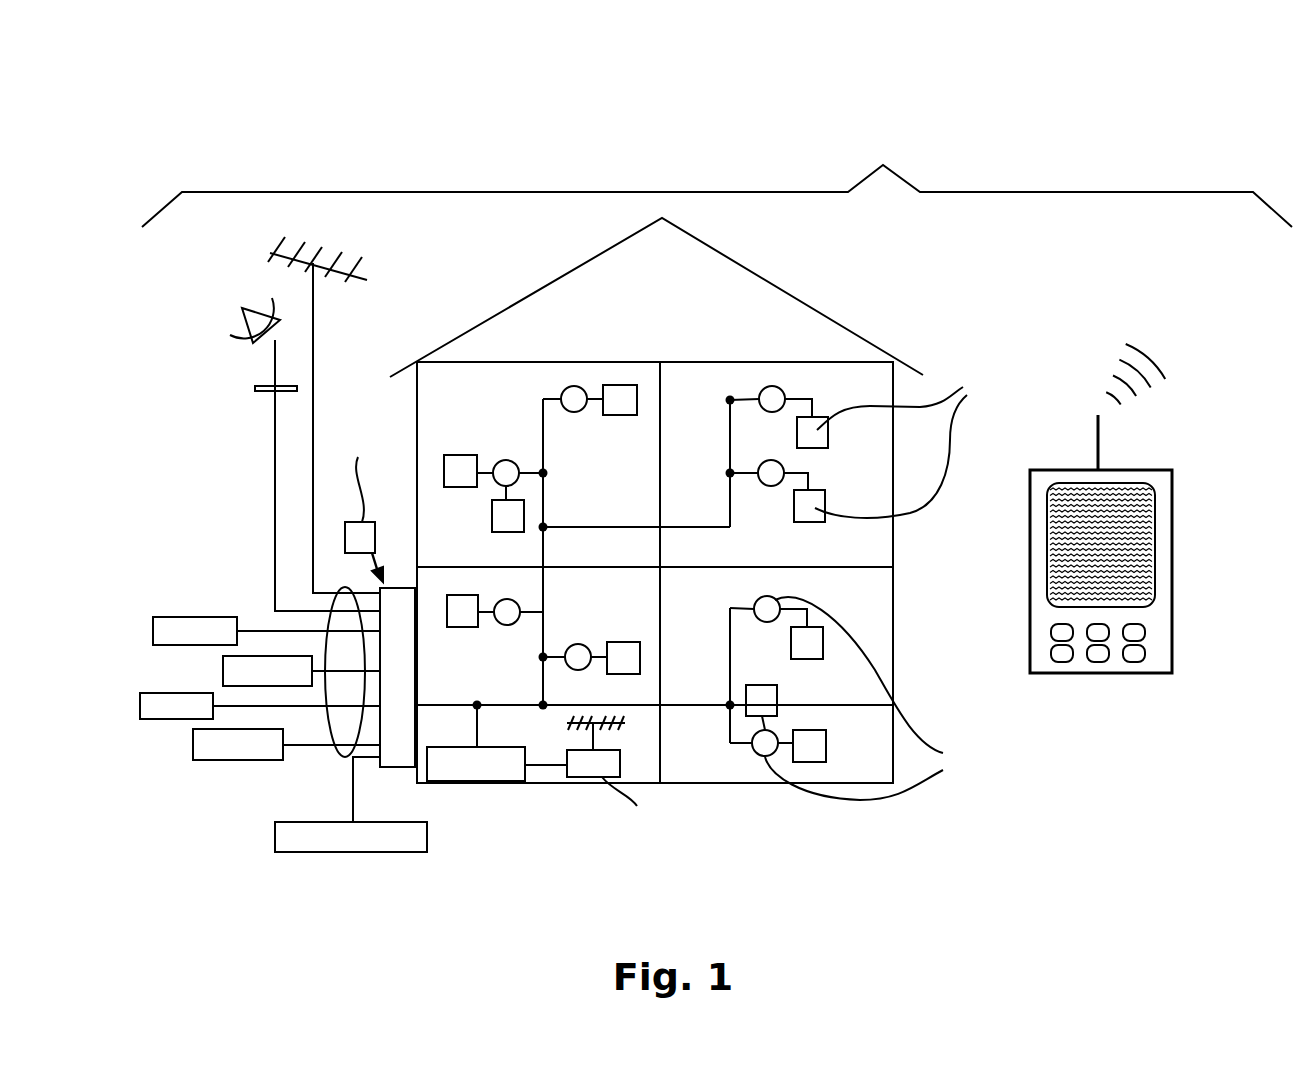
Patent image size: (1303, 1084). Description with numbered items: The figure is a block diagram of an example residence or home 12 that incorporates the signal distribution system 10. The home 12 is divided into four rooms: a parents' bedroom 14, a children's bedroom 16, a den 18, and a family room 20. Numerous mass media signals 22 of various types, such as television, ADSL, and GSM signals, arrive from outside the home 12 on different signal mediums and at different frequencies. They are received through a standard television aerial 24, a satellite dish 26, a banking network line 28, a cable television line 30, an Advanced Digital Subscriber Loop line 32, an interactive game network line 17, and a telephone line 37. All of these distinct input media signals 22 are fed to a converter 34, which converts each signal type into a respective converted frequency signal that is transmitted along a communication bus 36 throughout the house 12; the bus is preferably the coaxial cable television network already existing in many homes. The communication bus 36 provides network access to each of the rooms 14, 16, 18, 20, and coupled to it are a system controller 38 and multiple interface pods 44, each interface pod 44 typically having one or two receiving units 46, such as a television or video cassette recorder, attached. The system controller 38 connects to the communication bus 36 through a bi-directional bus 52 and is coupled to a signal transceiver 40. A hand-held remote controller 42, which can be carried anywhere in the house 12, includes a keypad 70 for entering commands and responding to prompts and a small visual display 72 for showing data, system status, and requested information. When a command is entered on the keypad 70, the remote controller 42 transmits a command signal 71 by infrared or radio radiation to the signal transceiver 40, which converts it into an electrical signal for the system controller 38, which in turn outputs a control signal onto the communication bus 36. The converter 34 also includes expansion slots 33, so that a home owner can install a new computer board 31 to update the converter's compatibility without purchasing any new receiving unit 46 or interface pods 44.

The signal distribution system 10 is at (717, 184).
The home 12 is at (882, 302).
The parents' bedroom 14 is at (871, 472).
The children's bedroom 16 is at (439, 513).
The interactive game network line 17 is at (210, 760).
The den 18 is at (436, 583).
The family room 20 is at (874, 585).
The mass media signals 22 is at (340, 757).
The television aerial 24 is at (313, 330).
The satellite dish 26 is at (275, 433).
The banking network line 28 is at (182, 617).
The cable television line 30 is at (223, 670).
The new computer board 31 is at (345, 530).
The Advanced Digital Subscriber Loop (ADSL) line 32 is at (153, 719).
The expansion slots 33 is at (380, 588).
The converter 34 is at (397, 767).
The communication bus 36 is at (715, 527).
The telephone line 37 is at (291, 852).
The system controller 38 is at (478, 783).
The signal transceiver 40 is at (582, 777).
The remote controller 42 is at (1172, 612).
The interface pod 44 is at (506, 460).
The receiving unit 46 is at (458, 455).
The bi-directional bus 52 is at (477, 723).
The keypad 70 is at (1060, 660).
The command signal 71 is at (1176, 342).
The visual display 72 is at (1125, 537).